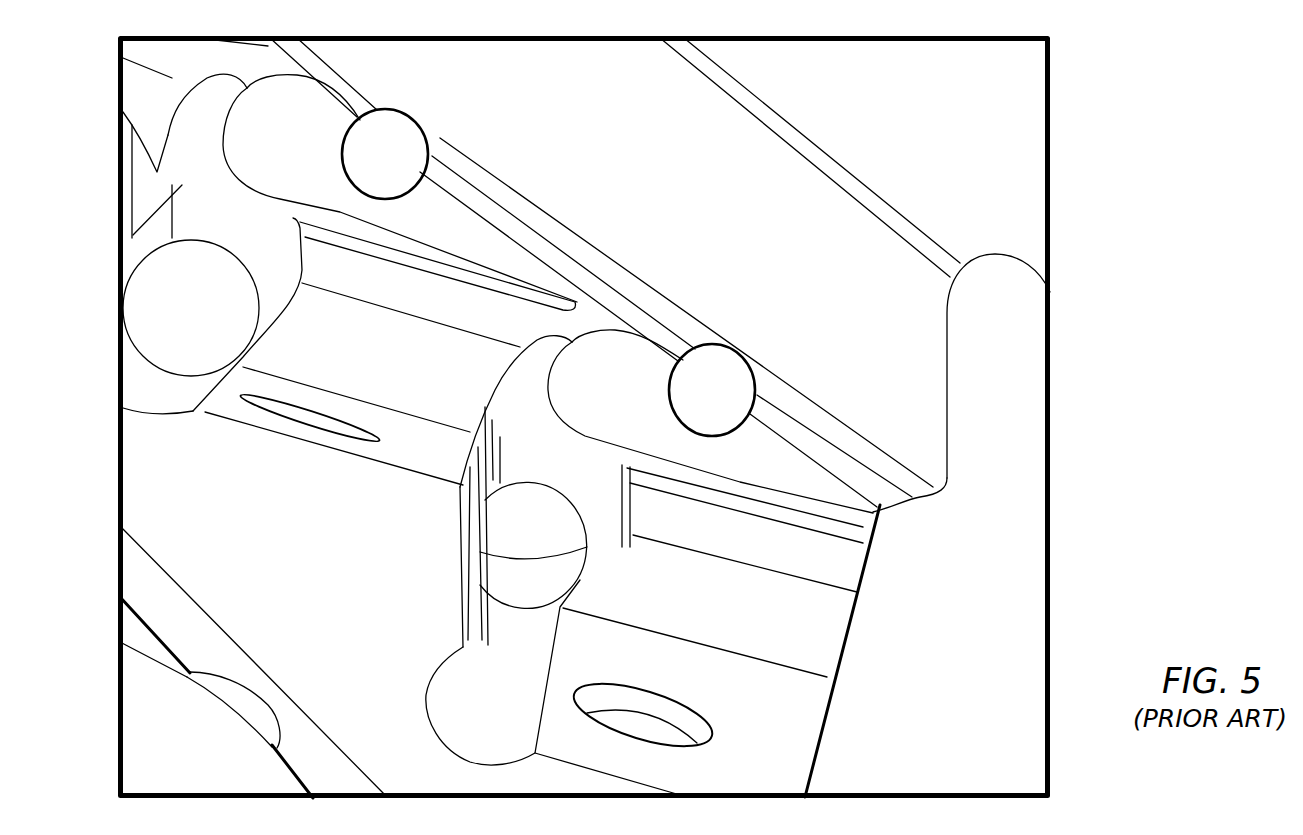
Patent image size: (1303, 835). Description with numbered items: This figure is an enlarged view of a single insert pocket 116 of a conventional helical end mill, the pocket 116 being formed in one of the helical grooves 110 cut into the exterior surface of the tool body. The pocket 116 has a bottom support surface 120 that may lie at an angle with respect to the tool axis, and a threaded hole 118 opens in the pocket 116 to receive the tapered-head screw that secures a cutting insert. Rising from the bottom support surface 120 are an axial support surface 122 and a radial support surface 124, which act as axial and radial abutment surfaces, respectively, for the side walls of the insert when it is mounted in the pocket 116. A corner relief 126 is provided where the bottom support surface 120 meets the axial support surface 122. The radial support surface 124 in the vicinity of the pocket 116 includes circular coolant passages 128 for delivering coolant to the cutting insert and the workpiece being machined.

The helical groove 110 is at (740, 212).
The pocket 116 is at (830, 643).
The threaded hole 118 is at (628, 697).
The bottom support surface 120 is at (750, 680).
The axial support surface 122 is at (578, 541).
The radial support surface 124 is at (714, 540).
The corner relief 126 is at (453, 694).
The circular coolant passage 128 is at (390, 142).